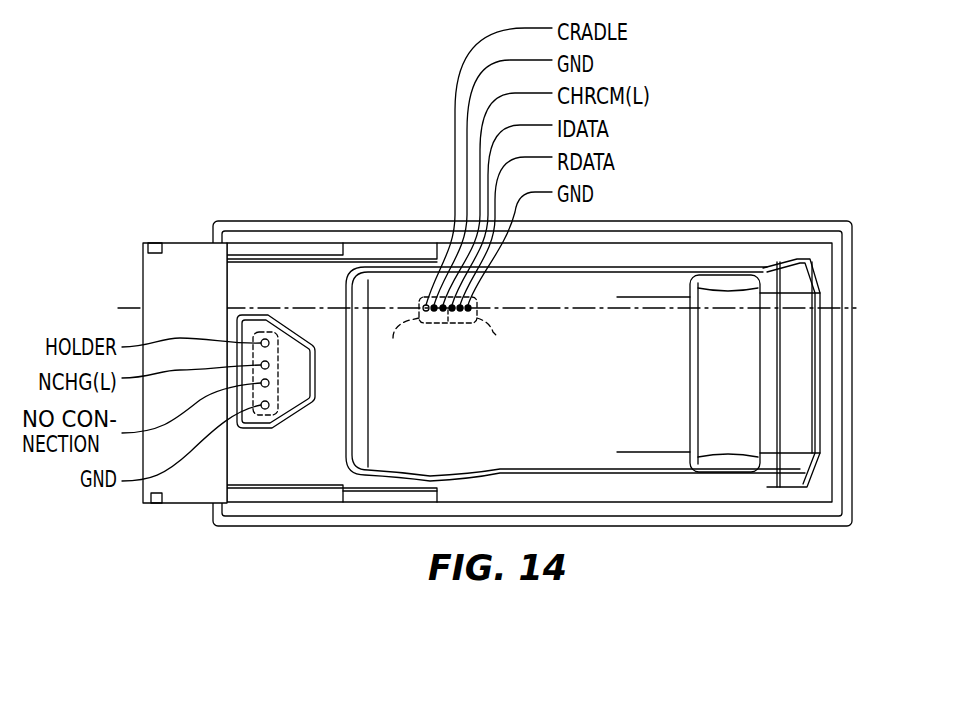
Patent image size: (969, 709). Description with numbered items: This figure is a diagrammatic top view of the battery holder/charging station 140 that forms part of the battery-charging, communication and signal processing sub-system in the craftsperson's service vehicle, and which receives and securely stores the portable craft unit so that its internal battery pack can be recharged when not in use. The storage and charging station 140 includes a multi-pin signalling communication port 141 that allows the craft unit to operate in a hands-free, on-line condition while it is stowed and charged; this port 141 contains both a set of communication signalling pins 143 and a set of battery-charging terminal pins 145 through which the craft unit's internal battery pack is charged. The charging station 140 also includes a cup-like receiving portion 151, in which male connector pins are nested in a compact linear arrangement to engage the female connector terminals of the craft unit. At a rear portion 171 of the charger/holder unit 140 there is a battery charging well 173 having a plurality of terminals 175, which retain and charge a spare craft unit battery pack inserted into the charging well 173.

The battery holder/charging station 140 is at (648, 218).
The cup-like receiving portion 151 is at (682, 283).
The multi-pin signalling communication port 141 is at (477, 332).
The communication signalling pins 143 is at (498, 337).
The battery-charging terminal pins 145 is at (436, 344).
The rear portion 171 is at (292, 475).
The battery charging well 173 is at (288, 398).
The terminals 175 is at (258, 419).